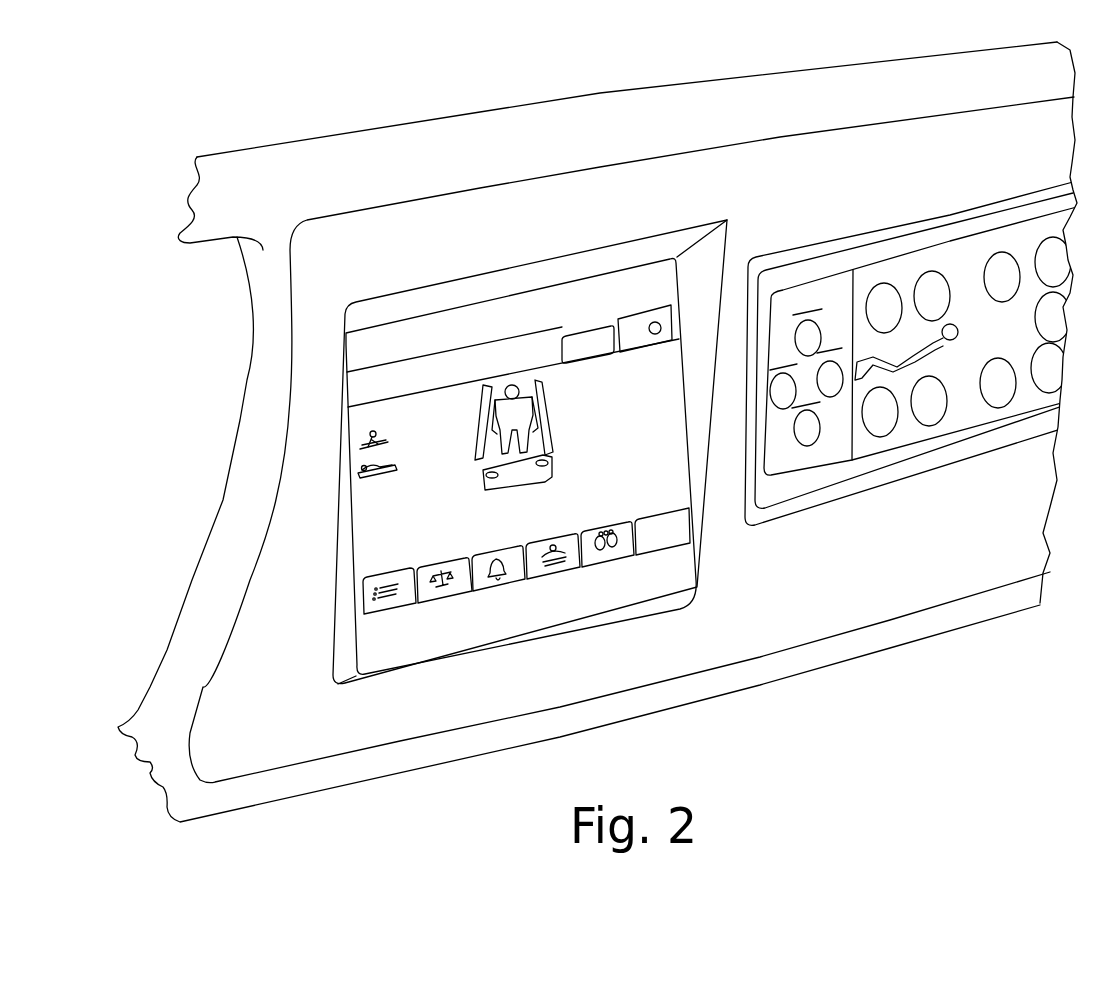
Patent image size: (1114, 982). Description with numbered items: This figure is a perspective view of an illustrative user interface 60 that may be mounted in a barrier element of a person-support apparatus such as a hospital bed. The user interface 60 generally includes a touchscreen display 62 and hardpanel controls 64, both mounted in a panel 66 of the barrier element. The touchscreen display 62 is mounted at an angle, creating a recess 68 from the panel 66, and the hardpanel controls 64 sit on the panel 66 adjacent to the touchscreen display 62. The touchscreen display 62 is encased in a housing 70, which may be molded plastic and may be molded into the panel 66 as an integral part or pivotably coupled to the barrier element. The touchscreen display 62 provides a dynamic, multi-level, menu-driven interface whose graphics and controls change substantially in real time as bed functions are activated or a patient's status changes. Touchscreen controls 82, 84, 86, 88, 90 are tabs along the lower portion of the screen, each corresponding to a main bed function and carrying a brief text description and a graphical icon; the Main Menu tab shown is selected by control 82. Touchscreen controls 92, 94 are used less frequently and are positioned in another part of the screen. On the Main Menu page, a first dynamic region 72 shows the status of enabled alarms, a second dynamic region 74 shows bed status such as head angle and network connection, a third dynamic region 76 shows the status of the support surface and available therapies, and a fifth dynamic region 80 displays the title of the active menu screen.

The user interface 60 is at (148, 318).
The touchscreen display 62 is at (514, 318).
The hardpanel controls 64 is at (944, 220).
The panel 66 is at (1037, 503).
The recess 68 is at (660, 245).
The housing 70 is at (686, 590).
The first dynamic region 72 is at (340, 463).
The second dynamic region 74 is at (340, 537).
The third dynamic region 76 is at (652, 385).
The fifth dynamic region 80 is at (465, 370).
The touchscreen control 82 is at (387, 622).
The touchscreen control 84 is at (462, 588).
The touchscreen control 86 is at (518, 575).
The touchscreen control 88 is at (572, 562).
The touchscreen control 90 is at (627, 550).
The touchscreen control 92 is at (572, 345).
The touchscreen control 94 is at (621, 328).